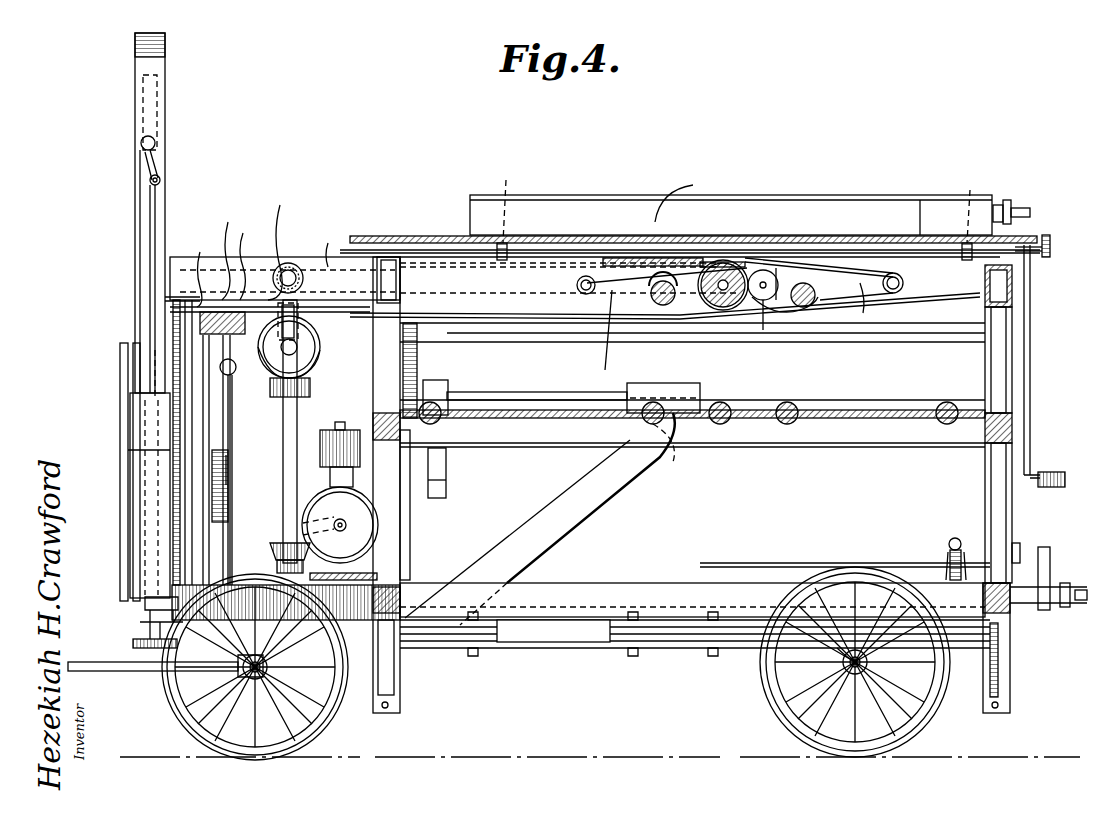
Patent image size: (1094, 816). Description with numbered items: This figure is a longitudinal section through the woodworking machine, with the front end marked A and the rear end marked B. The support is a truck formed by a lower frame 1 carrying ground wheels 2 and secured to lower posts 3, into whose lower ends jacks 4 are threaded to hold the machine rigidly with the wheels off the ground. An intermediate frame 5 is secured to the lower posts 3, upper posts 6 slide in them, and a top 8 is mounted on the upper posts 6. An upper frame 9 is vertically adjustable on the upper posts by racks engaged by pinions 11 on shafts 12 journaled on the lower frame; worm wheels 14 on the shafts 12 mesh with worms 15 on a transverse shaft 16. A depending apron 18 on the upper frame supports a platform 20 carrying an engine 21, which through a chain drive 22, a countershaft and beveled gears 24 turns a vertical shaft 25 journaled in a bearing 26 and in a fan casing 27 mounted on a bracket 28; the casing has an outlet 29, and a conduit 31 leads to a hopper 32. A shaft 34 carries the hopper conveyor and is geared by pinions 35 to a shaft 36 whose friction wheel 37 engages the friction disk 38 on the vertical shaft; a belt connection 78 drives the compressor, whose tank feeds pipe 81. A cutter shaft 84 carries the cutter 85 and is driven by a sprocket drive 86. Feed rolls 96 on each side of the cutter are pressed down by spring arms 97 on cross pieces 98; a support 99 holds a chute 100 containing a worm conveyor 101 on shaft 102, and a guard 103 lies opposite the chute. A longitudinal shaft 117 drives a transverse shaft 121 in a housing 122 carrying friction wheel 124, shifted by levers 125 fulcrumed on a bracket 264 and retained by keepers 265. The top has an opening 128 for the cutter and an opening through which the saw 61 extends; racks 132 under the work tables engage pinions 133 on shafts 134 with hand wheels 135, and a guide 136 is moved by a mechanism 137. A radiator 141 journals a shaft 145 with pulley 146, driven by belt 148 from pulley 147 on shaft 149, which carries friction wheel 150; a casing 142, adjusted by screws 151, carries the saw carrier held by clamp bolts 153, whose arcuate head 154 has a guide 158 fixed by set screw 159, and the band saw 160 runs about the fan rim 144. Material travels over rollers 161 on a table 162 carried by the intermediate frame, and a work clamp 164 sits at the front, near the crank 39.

The lower frame 1 is at (585, 610).
The ground wheels 2 is at (268, 747).
The lower posts 3 is at (988, 487).
The jacks 4 is at (400, 706).
The intermediate frame 5 is at (767, 433).
The upper posts 6 is at (1003, 358).
The top 8 is at (425, 236).
The upper frame 9 is at (985, 305).
The pinions 11 is at (1013, 543).
The shafts 12 is at (713, 563).
The worm wheels 14 is at (952, 575).
The worms 15 is at (955, 537).
The transverse shaft 16 is at (948, 545).
The apron 18 is at (395, 500).
The platform 20 is at (347, 573).
The engine 21 is at (333, 445).
The chain drive 22 is at (281, 555).
The beveled gears 24 is at (272, 552).
The vertical shaft 25 is at (283, 463).
The bearing 26 is at (298, 395).
The fan casing 27 is at (253, 600).
The bracket 28 is at (235, 660).
The outlet 29 is at (177, 596).
The conduit 31 is at (597, 493).
The hopper 32 is at (673, 357).
The shaft 34 is at (540, 400).
The intermeshing pinions 35 is at (417, 360).
The shaft 36 is at (598, 336).
The friction wheel 37 is at (332, 242).
The friction disk 38 is at (255, 255).
The crank handle 39 is at (1026, 443).
The saw 61 is at (682, 191).
The belt and pulley connection 78 is at (445, 385).
The pipe 81 is at (197, 300).
The cutter shaft 84 is at (720, 306).
The cutter 85 is at (725, 262).
The sprocket drive 86 is at (497, 272).
The feed rolls 96 is at (668, 305).
The spring arms 97 is at (739, 337).
The cross pieces 98 is at (577, 284).
The support 99 is at (850, 267).
The chute 100 is at (796, 312).
The worm conveyor 101 is at (763, 296).
The shaft 102 is at (765, 283).
The guard 103 is at (623, 257).
The longitudinal shaft 117 is at (343, 307).
The transverse shaft 121 is at (305, 268).
The housings 122 is at (300, 300).
The friction wheel 124 is at (282, 366).
The levers 125 is at (235, 373).
The opening 128 is at (566, 235).
The racks 132 is at (751, 201).
The pinions 133 is at (508, 243).
The shafts 134 is at (920, 247).
The hand wheels 135 is at (1048, 236).
The guide 136 is at (893, 196).
The mechanism 137 is at (1010, 203).
The radiator 141 is at (187, 543).
The casing 142 is at (146, 572).
The rim 144 is at (140, 517).
The shaft 145 is at (228, 456).
The pulley 146 is at (222, 513).
The pulley 147 is at (193, 268).
The belt 148 is at (220, 435).
The shaft 149 is at (225, 248).
The friction wheel 150 is at (276, 241).
The screws 151 is at (140, 643).
The clamp bolts 153 is at (175, 368).
The arcuate head 154 is at (163, 58).
The guide 158 is at (156, 163).
The set screw 159 is at (154, 139).
The band saw 160 is at (147, 215).
The rollers 161 is at (722, 406).
The table 162 is at (687, 420).
The work clamp 164 is at (1048, 547).
The bracket 264 is at (318, 368).
The keepers 265 is at (247, 350).
The front end A is at (1024, 327).
The rear end B is at (113, 439).